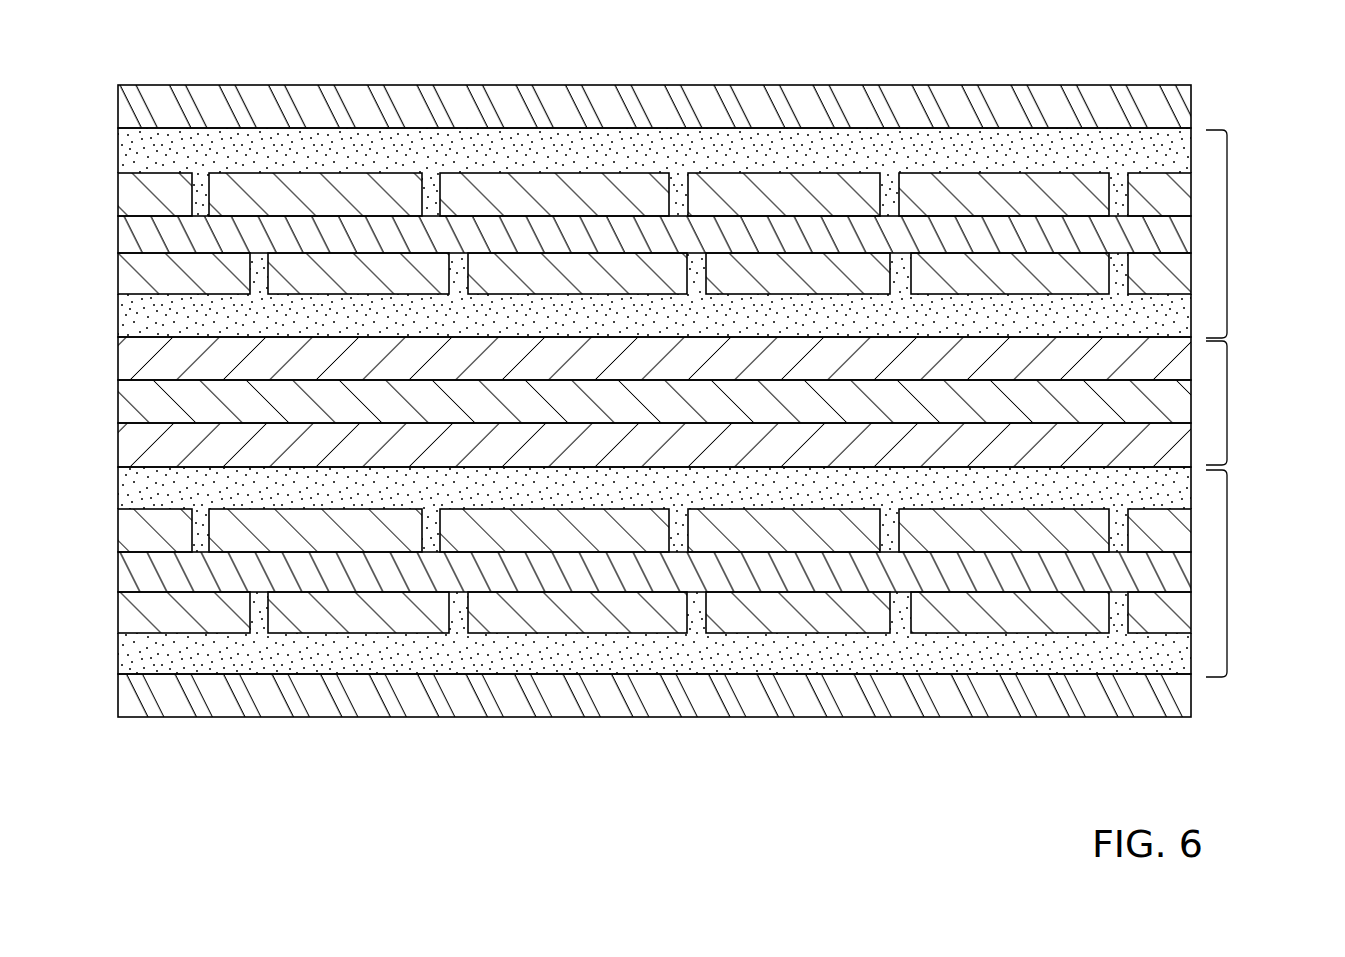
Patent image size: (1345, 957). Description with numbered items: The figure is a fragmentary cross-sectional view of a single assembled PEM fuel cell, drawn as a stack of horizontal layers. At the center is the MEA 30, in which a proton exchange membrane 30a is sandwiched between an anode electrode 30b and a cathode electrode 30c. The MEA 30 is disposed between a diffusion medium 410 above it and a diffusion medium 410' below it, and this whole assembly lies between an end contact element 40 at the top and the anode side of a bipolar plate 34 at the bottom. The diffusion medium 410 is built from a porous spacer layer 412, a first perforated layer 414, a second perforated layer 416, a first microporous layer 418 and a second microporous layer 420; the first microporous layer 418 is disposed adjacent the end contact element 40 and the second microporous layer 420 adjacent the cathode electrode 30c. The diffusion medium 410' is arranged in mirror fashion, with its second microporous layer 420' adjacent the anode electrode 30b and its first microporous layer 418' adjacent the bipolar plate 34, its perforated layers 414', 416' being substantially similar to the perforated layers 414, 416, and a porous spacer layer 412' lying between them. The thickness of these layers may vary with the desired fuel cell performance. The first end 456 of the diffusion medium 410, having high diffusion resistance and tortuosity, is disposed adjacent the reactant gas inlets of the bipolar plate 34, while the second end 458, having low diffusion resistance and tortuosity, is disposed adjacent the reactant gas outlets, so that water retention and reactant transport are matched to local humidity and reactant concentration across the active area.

The end contact element 40 is at (118, 101).
The first microporous layer 418 is at (609, 172).
The first perforated layer 414 is at (609, 194).
The porous spacer layer 412 is at (616, 234).
The second perforated layer 416 is at (609, 273).
The second microporous layer 420 is at (609, 295).
The cathode electrode 30c is at (118, 362).
The proton exchange membrane 30a is at (118, 406).
The anode electrode 30b is at (118, 448).
The second microporous layer 420' is at (614, 509).
The second perforated layer 416' is at (609, 530).
The porous spacer layer 412' is at (609, 572).
The first perforated layer 414' is at (617, 612).
The first microporous layer 418' is at (609, 633).
The bipolar plate 34 is at (118, 703).
The diffusion medium 410 is at (1241, 234).
The MEA 30 is at (1227, 403).
The diffusion medium 410' is at (1244, 573).
The first end 456 is at (1151, 171).
The second end 458 is at (144, 506).